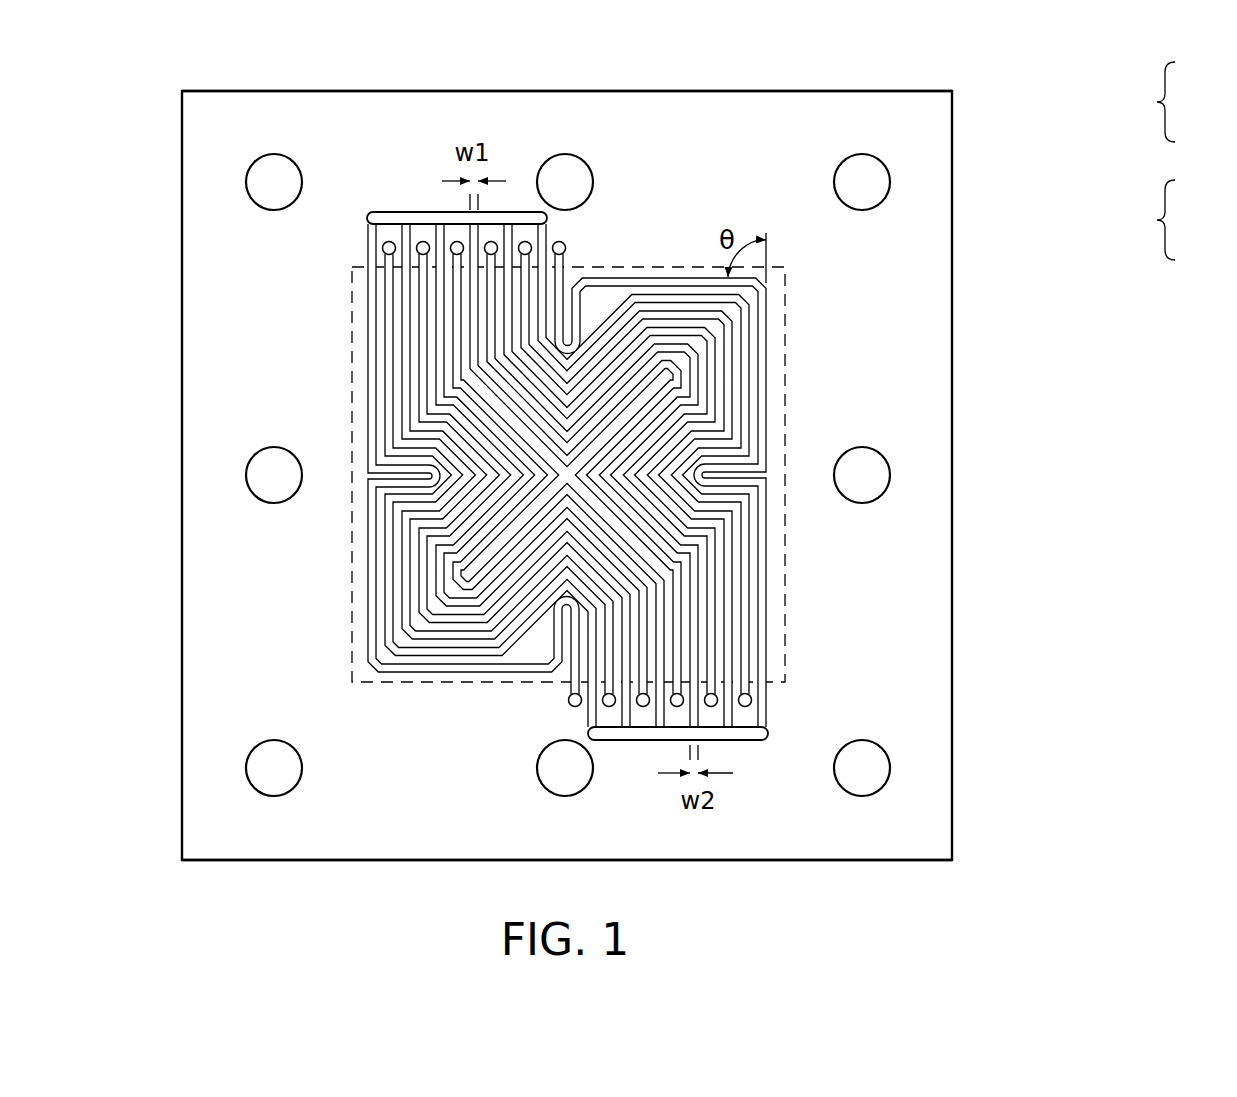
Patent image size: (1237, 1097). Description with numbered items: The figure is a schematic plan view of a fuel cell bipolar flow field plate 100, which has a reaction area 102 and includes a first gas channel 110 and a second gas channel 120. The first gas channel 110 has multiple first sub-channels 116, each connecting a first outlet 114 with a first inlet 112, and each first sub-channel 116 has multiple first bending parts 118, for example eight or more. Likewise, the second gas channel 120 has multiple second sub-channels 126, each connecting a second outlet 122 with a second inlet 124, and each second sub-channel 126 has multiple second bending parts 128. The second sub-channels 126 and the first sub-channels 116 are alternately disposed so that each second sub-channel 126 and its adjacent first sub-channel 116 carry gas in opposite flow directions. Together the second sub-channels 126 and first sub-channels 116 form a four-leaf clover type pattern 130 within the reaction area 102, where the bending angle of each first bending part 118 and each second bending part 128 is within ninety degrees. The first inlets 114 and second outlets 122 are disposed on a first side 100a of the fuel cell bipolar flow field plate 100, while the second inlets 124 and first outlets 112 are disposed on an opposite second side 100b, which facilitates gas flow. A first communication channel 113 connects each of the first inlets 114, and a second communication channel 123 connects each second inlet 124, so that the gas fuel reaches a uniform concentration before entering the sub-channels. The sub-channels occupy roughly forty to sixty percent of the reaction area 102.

The fuel cell bipolar flow field plate 100 is at (182, 152).
The first side 100a is at (270, 91).
The second side 100b is at (270, 860).
The reaction area 102 is at (785, 320).
The first gas channel 110 is at (1162, 127).
The first inlet 112 is at (565, 244).
The first communication channel 113 is at (425, 222).
The first outlet 114 is at (378, 212).
The first sub-channel 116 is at (384, 247).
The first bending part 118 is at (369, 471).
The second gas channel 120 is at (1162, 225).
The second outlet 122 is at (1195, 186).
The second communication channel 123 is at (647, 740).
The second inlet 124 is at (762, 740).
The second sub-channel 126 is at (770, 640).
The second bending part 128 is at (766, 479).
The four-leaf clover type pattern 130 is at (569, 473).